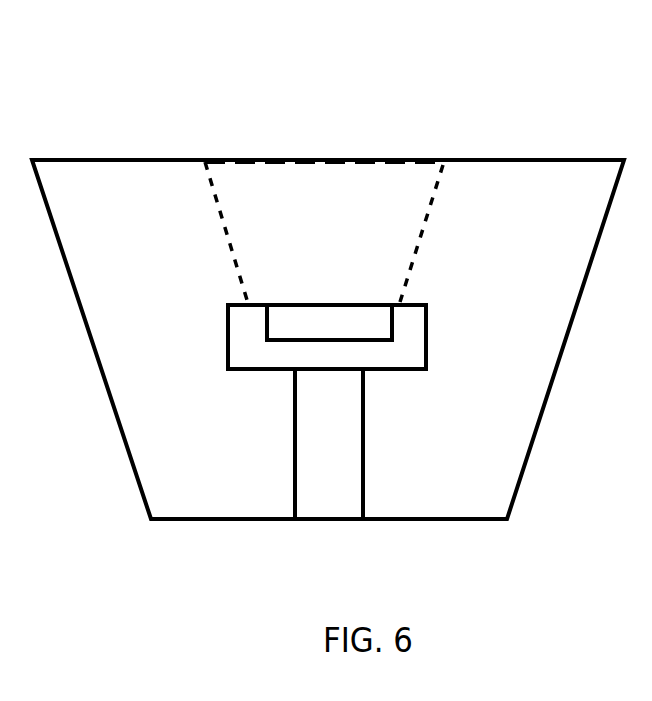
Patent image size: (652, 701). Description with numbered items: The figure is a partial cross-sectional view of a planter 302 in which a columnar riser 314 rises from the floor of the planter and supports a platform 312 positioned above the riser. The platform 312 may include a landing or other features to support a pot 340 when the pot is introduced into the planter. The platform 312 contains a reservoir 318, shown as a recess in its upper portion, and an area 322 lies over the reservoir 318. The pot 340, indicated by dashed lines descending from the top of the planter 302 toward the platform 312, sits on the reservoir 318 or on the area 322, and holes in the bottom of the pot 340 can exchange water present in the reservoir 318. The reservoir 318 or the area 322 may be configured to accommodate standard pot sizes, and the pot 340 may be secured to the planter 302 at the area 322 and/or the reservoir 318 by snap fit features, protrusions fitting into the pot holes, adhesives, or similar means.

The planter 302 is at (74, 157).
The pot 340 is at (430, 215).
The platform 312 is at (407, 347).
The area 322 is at (236, 300).
The reservoir 318 is at (367, 321).
The riser 314 is at (348, 412).